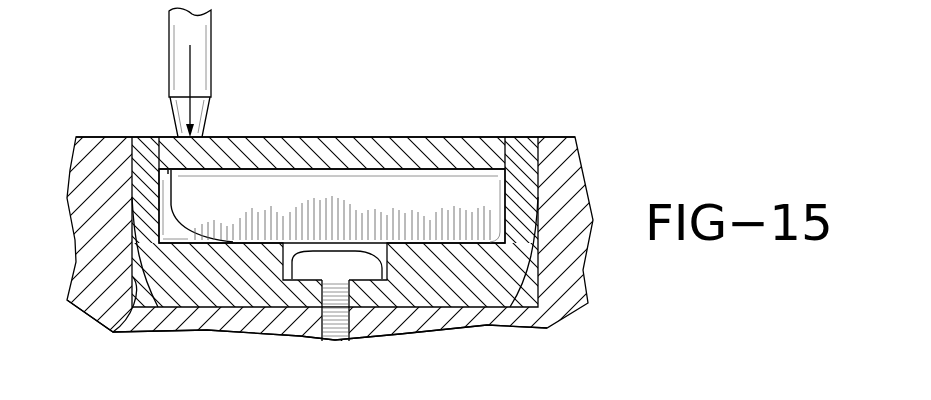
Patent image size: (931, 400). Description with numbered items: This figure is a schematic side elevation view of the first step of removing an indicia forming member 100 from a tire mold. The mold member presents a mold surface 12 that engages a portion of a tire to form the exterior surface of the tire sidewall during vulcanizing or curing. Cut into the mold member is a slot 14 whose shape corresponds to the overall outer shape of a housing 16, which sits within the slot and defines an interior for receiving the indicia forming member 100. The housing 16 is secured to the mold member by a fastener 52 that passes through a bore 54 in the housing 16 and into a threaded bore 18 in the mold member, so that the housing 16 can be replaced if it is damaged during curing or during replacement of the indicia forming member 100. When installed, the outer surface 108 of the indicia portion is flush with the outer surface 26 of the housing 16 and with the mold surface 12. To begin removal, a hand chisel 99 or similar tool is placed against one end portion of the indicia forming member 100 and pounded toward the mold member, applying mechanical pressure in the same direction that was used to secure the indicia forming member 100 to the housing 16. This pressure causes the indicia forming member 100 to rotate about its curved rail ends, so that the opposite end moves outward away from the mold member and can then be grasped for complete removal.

The surface 12 is at (553, 137).
The slot 14 is at (113, 332).
The housing 16 is at (530, 282).
The outer surface 26 is at (143, 137).
The fastener 52 is at (320, 263).
The threaded bore 18 is at (328, 320).
The bore 54 is at (350, 296).
The hand chisel 99 is at (224, 79).
The indicia forming member 100 is at (398, 132).
The outer surface 108 is at (232, 137).